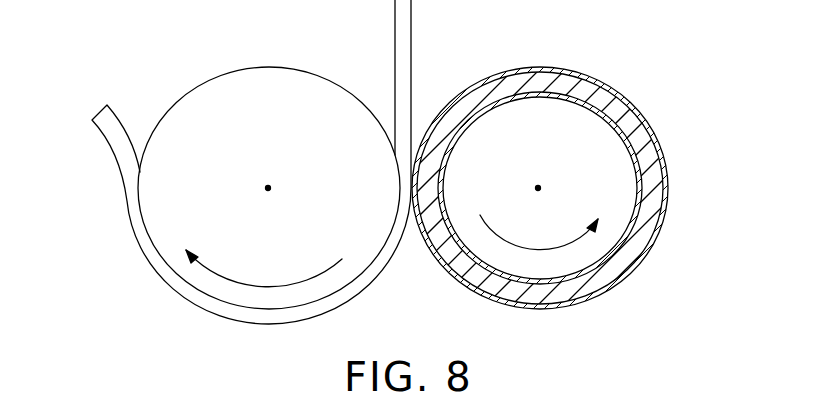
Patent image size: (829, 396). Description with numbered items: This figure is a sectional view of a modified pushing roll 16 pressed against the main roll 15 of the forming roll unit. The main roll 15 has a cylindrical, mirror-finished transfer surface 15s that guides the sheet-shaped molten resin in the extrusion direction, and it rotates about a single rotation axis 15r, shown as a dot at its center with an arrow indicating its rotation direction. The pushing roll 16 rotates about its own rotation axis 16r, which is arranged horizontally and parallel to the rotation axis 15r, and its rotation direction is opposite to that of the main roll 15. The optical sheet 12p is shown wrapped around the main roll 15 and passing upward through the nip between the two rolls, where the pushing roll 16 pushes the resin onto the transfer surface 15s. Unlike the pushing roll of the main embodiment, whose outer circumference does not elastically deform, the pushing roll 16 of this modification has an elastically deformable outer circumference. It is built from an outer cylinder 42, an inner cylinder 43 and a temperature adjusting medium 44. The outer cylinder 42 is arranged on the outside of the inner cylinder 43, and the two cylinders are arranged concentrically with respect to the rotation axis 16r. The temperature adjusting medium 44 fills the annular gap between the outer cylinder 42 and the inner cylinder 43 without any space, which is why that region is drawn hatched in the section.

The optical sheet 12p is at (113, 148).
The main roll 15 is at (269, 163).
The transfer surface 15s is at (283, 66).
The rotation axis 15r is at (264, 236).
The pushing roll 16 is at (456, 198).
The rotation axis 16r is at (539, 218).
The outer cylinder 42 is at (667, 207).
The inner cylinder 43 is at (632, 242).
The temperature adjusting medium 44 is at (650, 161).